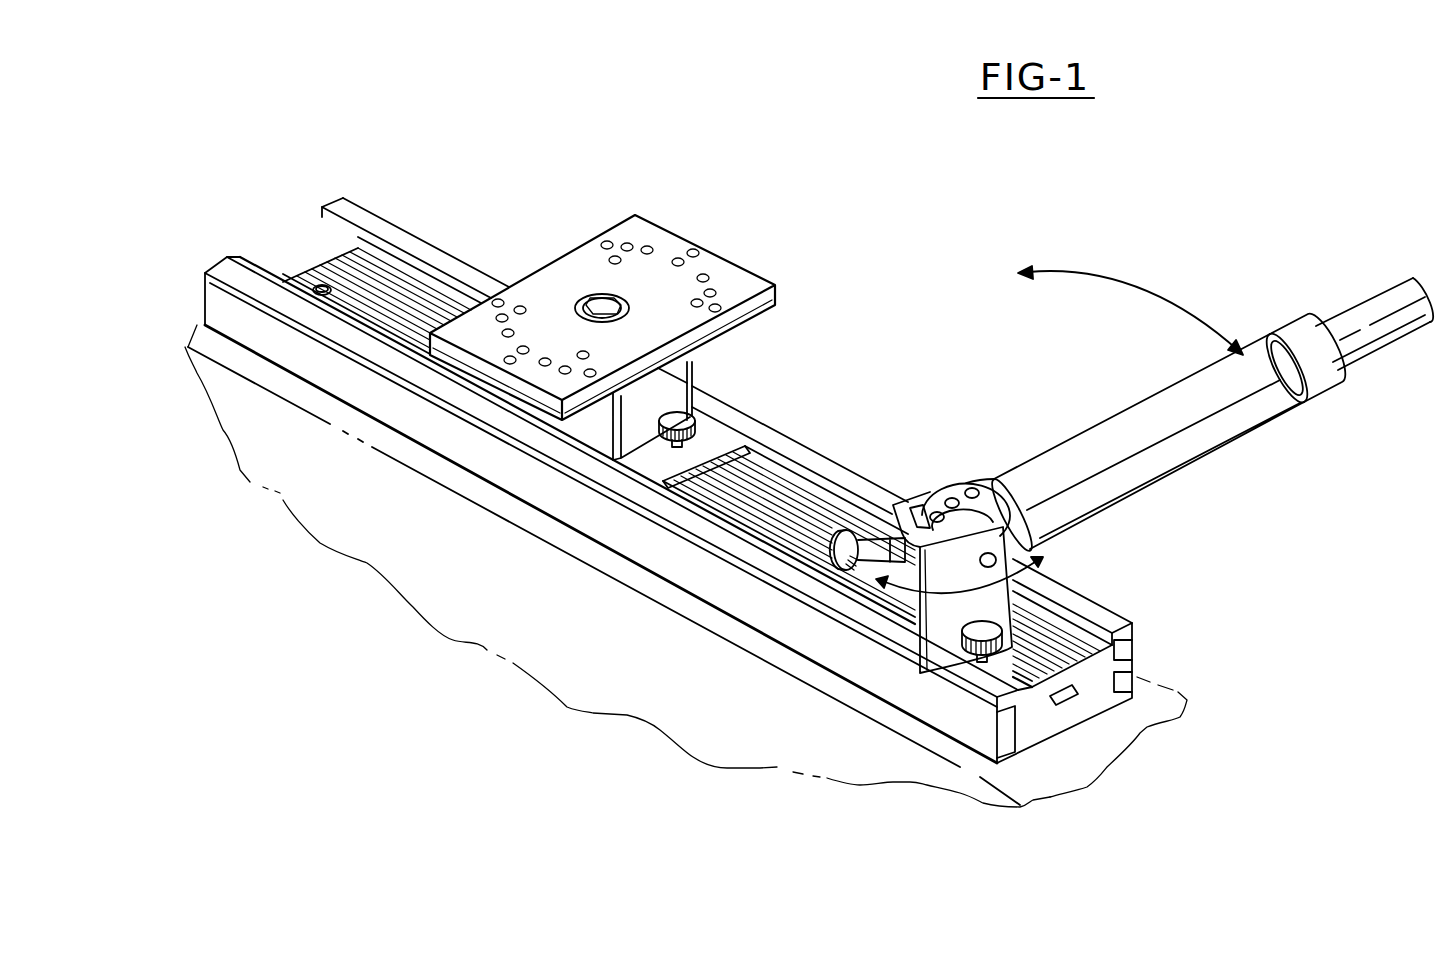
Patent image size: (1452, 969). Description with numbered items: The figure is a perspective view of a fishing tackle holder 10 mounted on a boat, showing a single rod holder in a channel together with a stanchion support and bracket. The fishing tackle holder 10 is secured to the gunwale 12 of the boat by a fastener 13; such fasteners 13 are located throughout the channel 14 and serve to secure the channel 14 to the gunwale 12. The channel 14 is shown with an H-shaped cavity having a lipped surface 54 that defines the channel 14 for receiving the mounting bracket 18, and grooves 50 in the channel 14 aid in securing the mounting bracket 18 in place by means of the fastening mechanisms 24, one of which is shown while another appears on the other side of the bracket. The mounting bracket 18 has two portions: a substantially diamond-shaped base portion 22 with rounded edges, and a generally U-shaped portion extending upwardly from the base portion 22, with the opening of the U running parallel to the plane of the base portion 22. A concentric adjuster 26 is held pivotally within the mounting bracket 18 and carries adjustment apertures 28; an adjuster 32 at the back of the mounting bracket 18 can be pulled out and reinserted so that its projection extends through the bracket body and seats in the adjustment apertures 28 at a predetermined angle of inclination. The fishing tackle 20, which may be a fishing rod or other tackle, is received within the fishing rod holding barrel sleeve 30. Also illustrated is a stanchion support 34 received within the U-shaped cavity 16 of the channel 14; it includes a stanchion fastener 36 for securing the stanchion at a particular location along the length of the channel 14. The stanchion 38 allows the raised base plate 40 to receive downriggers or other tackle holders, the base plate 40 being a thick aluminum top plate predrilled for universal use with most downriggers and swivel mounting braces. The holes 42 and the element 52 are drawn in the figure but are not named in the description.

The fishing tackle holder 10 is at (611, 167).
The gunwale 12 is at (717, 734).
The fastener 13 is at (322, 288).
The channel 14 is at (1073, 633).
The U-shaped cavity 16 is at (1137, 660).
The mounting bracket 18 is at (940, 630).
The fishing tackle 20 is at (1383, 348).
The base portion 22 is at (883, 600).
The fastening mechanism 24 is at (1000, 632).
The concentric adjuster 26 is at (940, 498).
The adjustment apertures 28 is at (975, 495).
The fishing rod holding barrel sleeve 30 is at (1230, 427).
The adjuster 32 is at (840, 532).
The stanchion support 34 is at (720, 434).
The stanchion fastener 36 is at (687, 418).
The stanchion 38 is at (657, 397).
The base plate 40 is at (545, 280).
The plate holes 42 is at (607, 243).
The grooves 50 is at (1063, 703).
The rail channel 52 is at (1023, 733).
The lipped surface 54 is at (1137, 693).